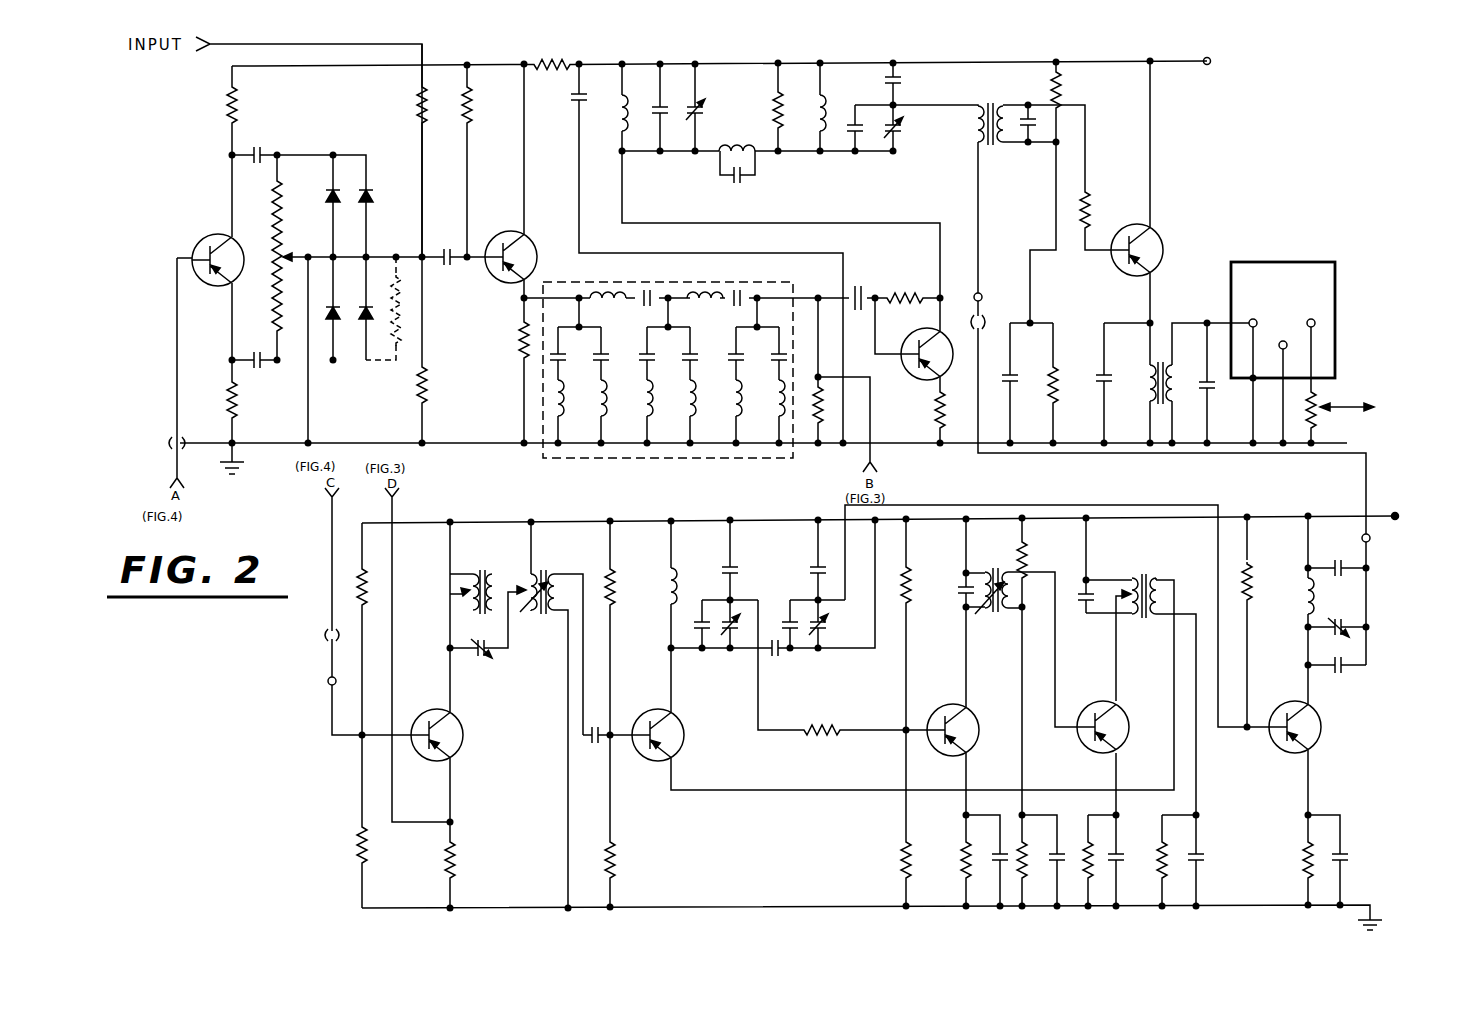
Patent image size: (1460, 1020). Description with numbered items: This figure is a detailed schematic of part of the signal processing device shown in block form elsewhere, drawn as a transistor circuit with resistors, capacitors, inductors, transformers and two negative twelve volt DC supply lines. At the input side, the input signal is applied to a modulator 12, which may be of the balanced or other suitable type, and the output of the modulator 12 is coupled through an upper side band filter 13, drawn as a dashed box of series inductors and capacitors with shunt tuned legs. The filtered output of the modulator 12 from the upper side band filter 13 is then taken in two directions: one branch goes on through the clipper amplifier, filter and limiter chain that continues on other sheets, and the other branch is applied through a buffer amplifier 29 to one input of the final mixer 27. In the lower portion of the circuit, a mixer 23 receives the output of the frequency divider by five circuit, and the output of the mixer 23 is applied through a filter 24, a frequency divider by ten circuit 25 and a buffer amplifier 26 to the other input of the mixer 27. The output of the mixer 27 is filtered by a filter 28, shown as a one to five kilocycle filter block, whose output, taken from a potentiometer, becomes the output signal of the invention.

The modulator 12 is at (335, 150).
The upper side band filter 13 is at (696, 287).
The mixer 23 is at (483, 573).
The filter 24 is at (770, 576).
The frequency divider by 10 circuit 25 is at (1046, 516).
The buffer amplifier 26 is at (1323, 514).
The mixer 27 is at (981, 57).
The filter 28 is at (1301, 262).
The buffer amplifier 29 is at (623, 61).